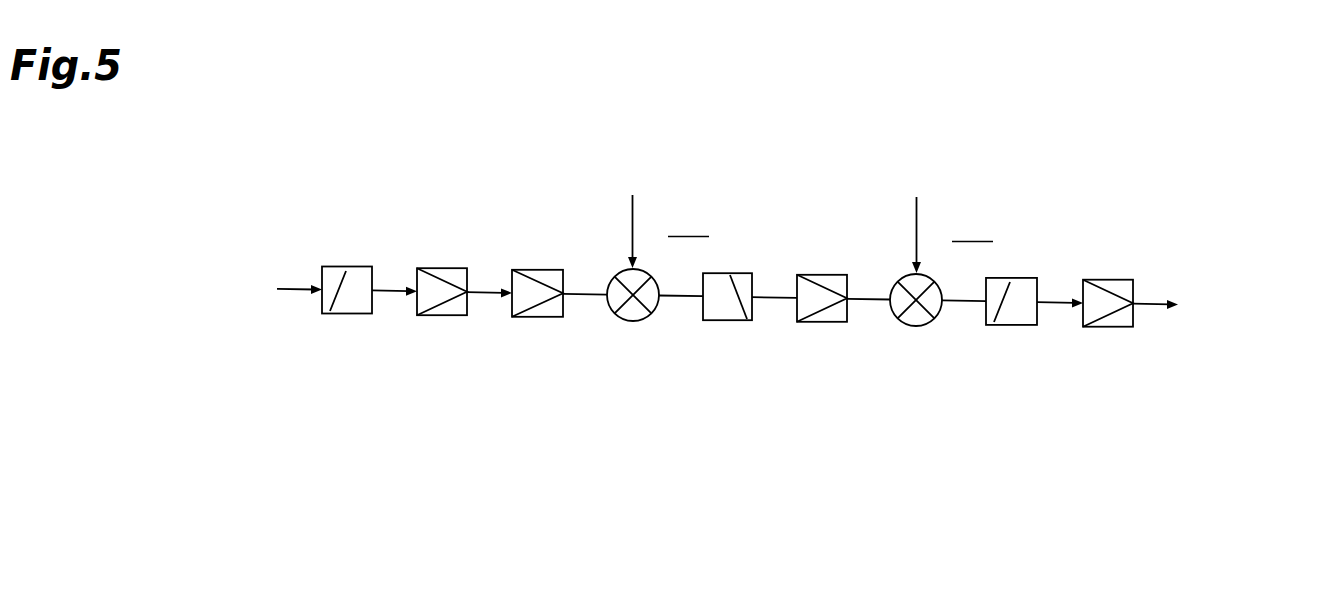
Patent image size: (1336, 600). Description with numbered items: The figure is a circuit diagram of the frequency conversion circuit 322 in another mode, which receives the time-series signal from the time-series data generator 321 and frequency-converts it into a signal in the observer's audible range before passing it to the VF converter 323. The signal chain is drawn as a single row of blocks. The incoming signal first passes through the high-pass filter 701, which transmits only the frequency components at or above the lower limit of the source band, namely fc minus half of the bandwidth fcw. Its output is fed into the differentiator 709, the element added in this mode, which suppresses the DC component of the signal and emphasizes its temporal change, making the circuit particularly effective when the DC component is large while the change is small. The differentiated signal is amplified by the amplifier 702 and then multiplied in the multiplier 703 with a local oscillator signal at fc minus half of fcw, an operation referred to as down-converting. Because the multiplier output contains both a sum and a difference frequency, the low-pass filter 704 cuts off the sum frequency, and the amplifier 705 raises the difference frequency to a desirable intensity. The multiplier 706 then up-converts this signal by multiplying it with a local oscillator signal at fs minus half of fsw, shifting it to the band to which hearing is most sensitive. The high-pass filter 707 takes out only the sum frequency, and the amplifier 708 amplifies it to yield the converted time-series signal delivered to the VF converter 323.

The time-series data generator 321 is at (222, 292).
The frequency conversion circuit 322 is at (1097, 184).
The VF converter 323 is at (1232, 310).
The high-pass filter 701 is at (345, 314).
The differentiator 709 is at (442, 316).
The amplifier 702 is at (537, 318).
The multiplier 703 is at (629, 322).
The low-pass filter 704 is at (727, 321).
The amplifier 705 is at (821, 323).
The multiplier 706 is at (913, 327).
The high-pass filter 707 is at (1011, 326).
The amplifier 708 is at (1107, 328).